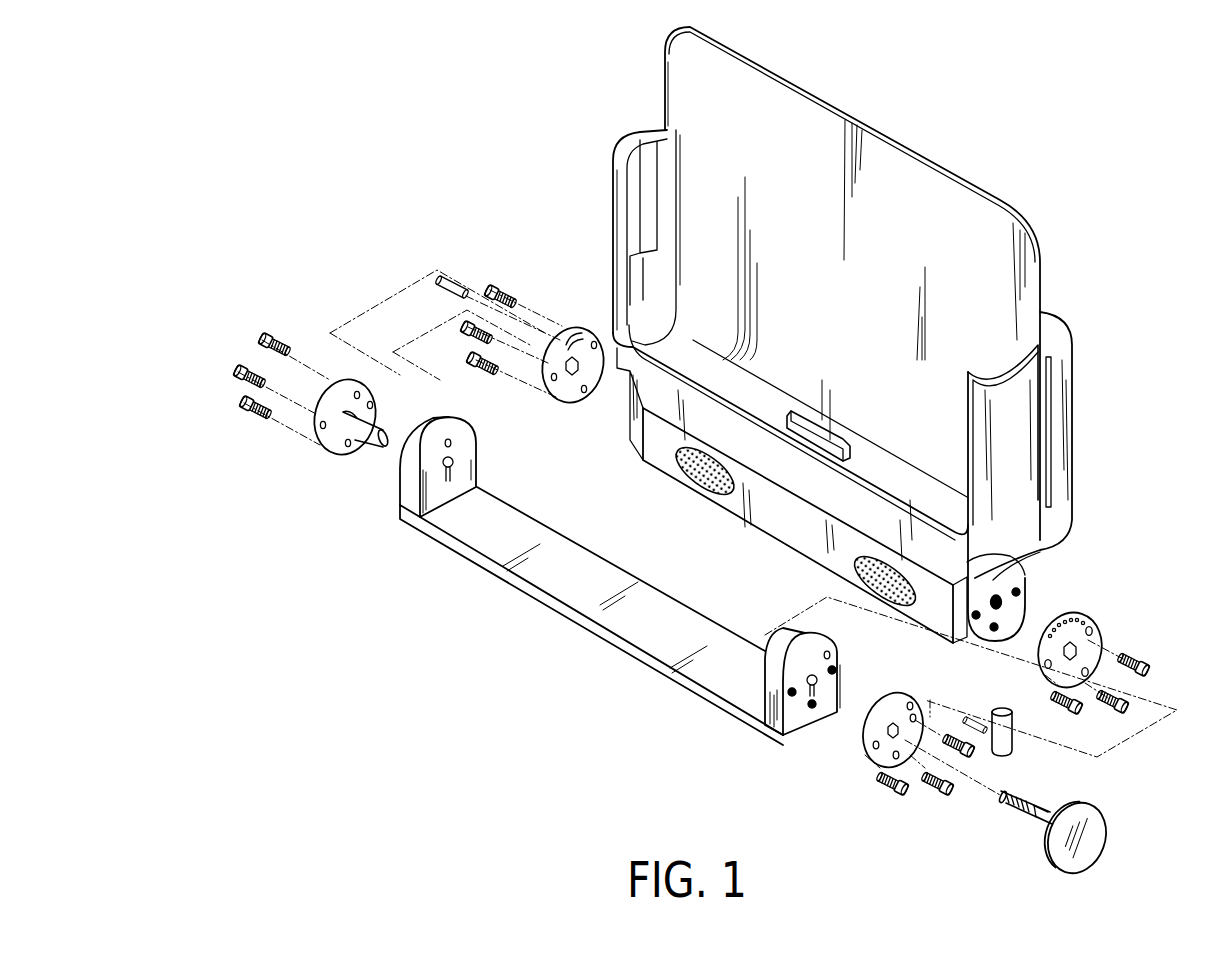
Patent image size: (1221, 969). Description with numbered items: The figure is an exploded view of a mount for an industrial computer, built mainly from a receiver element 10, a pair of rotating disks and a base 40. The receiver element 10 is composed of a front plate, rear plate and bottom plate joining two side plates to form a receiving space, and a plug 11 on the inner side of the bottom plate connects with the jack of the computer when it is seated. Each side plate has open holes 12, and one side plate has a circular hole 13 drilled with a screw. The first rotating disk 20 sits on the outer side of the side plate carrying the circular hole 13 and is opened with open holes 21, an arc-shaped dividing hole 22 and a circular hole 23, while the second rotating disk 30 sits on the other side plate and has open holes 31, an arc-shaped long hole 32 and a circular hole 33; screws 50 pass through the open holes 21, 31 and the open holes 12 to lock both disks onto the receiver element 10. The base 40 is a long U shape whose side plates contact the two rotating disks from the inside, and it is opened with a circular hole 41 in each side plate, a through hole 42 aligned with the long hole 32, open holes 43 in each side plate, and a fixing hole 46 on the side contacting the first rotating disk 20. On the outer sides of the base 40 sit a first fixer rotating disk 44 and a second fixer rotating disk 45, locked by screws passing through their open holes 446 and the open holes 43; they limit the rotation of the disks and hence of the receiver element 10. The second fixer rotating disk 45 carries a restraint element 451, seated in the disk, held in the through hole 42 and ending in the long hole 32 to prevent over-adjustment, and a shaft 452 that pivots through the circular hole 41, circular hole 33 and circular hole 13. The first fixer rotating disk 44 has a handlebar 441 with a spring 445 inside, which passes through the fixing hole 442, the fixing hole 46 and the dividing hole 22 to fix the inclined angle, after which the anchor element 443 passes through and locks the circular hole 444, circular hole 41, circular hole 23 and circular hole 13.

The receiver element 10 is at (947, 160).
The plug 11 is at (803, 441).
The open holes 12 is at (1000, 603).
The circular hole 13 is at (1000, 573).
The first rotating disk 20 is at (1037, 672).
The open holes 21 is at (1100, 627).
The dividing hole 22 is at (1089, 624).
The circular hole 23 is at (1046, 628).
The second rotating disk 30 is at (566, 400).
The open holes 31 is at (597, 335).
The long hole 32 is at (572, 340).
The circular hole 33 is at (585, 395).
The base 40 is at (553, 585).
The circular hole 41 is at (816, 712).
The through hole 42 is at (410, 475).
The open holes 43 is at (850, 668).
The first fixer rotating disk 44 is at (920, 795).
The handlebar 441 is at (1015, 737).
The fixing hole 442 is at (918, 695).
The anchor element 443 is at (1087, 838).
The circular hole 444 is at (866, 738).
The spring 445 is at (978, 736).
The open holes 446 is at (957, 795).
The second fixer rotating disk 45 is at (330, 403).
The restraint element 451 is at (451, 278).
The shaft 452 is at (352, 452).
The fixing hole 46 is at (831, 658).
The screws 50 is at (262, 338).